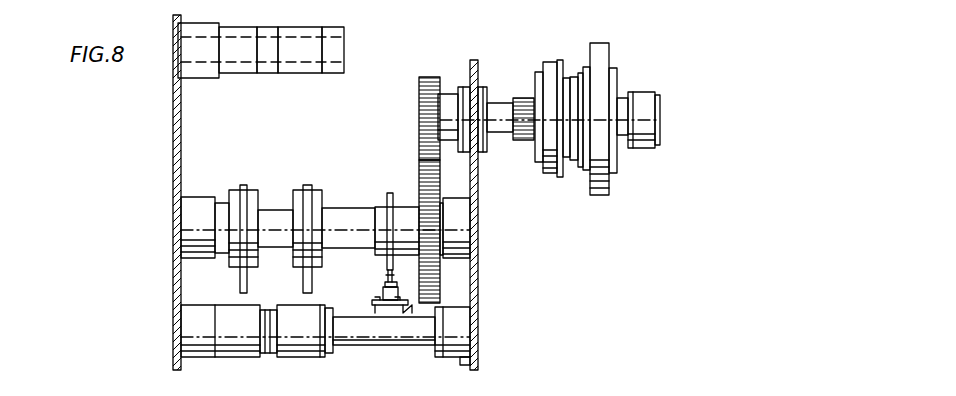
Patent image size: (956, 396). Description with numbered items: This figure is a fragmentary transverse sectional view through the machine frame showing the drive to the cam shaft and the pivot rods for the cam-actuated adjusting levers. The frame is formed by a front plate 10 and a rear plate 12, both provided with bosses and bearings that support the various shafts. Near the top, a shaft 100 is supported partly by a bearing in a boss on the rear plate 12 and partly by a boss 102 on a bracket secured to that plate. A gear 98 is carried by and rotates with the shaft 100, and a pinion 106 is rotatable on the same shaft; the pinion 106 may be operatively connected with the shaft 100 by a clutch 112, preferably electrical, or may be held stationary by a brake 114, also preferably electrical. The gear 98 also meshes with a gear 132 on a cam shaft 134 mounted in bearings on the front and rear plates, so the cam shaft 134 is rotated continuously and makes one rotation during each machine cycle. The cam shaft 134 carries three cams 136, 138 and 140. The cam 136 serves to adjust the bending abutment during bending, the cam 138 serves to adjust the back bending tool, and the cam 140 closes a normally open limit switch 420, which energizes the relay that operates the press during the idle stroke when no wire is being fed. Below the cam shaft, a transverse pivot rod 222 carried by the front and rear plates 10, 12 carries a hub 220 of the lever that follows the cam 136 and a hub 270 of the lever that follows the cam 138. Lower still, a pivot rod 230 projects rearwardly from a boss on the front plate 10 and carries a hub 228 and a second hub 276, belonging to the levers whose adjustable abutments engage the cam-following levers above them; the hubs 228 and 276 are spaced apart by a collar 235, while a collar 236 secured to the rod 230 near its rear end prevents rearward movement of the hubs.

The front plate 10 is at (173, 154).
The rear plate 12 is at (480, 270).
The gear 98 is at (427, 78).
The shaft 100 is at (497, 104).
The boss 102 is at (641, 95).
The pinion 106 is at (516, 141).
The clutch 112 is at (600, 46).
The brake 114 is at (549, 68).
The gear 132 is at (423, 170).
The cam shaft 134 is at (352, 216).
The cam 136 is at (303, 280).
The cam 138 is at (240, 280).
The cam 140 is at (386, 264).
The hub 220 is at (300, 347).
The transverse pivot rod 222 is at (370, 330).
The hub 228 is at (304, 73).
The pivot rod 230 is at (345, 53).
The collar 235 is at (271, 73).
The collar 236 is at (340, 71).
The hub 270 is at (240, 347).
The hub 276 is at (246, 74).
The limit switch 420 is at (383, 293).